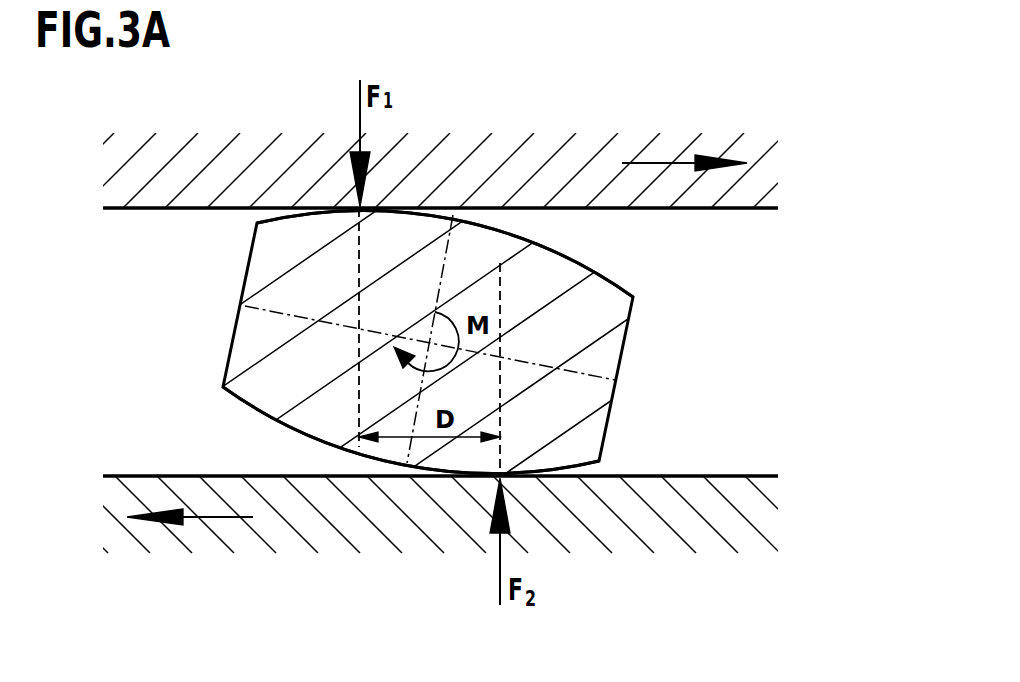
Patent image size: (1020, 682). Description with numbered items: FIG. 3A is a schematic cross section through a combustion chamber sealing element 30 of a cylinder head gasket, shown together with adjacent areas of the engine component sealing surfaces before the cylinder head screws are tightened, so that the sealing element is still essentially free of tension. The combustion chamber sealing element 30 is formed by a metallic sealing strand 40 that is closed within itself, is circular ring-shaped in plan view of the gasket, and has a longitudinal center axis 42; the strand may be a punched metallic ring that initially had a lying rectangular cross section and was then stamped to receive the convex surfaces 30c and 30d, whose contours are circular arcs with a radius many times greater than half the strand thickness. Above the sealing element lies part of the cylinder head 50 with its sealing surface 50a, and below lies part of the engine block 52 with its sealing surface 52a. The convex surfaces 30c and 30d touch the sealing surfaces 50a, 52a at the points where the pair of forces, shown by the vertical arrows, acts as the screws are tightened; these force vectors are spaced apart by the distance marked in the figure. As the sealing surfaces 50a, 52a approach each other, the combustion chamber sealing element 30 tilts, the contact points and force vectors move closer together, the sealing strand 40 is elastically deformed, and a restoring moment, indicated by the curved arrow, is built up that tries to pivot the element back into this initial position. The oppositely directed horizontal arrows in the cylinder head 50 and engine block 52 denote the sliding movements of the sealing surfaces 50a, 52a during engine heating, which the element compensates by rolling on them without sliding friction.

The combustion chamber sealing element 30 is at (406, 341).
The convex surface 30c is at (558, 250).
The convex surface 30d is at (302, 433).
The metallic sealing strand 40 is at (218, 249).
The longitudinal center axis 42 is at (420, 326).
The cylinder head 50 is at (747, 197).
The sealing surface of the cylinder head 50a is at (732, 210).
The engine block 52 is at (737, 528).
The sealing surface of the engine block 52a is at (723, 476).